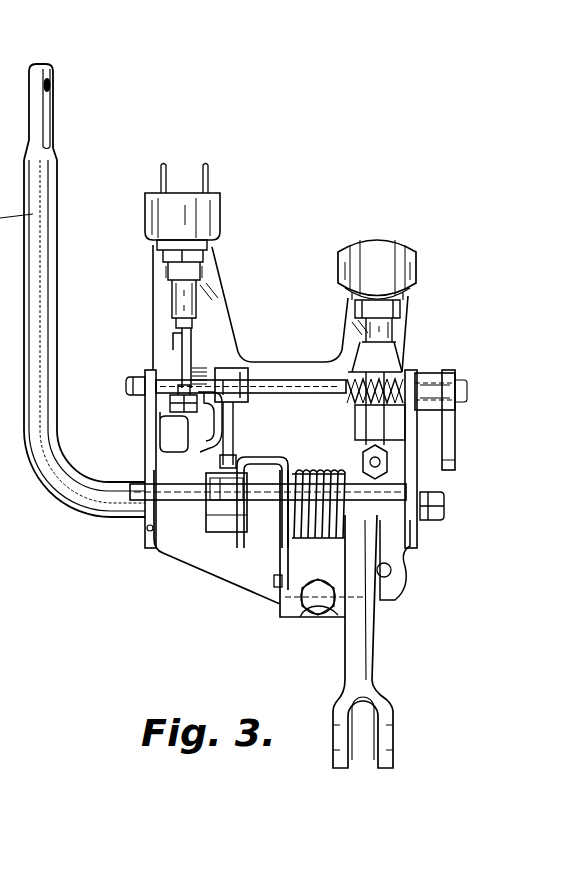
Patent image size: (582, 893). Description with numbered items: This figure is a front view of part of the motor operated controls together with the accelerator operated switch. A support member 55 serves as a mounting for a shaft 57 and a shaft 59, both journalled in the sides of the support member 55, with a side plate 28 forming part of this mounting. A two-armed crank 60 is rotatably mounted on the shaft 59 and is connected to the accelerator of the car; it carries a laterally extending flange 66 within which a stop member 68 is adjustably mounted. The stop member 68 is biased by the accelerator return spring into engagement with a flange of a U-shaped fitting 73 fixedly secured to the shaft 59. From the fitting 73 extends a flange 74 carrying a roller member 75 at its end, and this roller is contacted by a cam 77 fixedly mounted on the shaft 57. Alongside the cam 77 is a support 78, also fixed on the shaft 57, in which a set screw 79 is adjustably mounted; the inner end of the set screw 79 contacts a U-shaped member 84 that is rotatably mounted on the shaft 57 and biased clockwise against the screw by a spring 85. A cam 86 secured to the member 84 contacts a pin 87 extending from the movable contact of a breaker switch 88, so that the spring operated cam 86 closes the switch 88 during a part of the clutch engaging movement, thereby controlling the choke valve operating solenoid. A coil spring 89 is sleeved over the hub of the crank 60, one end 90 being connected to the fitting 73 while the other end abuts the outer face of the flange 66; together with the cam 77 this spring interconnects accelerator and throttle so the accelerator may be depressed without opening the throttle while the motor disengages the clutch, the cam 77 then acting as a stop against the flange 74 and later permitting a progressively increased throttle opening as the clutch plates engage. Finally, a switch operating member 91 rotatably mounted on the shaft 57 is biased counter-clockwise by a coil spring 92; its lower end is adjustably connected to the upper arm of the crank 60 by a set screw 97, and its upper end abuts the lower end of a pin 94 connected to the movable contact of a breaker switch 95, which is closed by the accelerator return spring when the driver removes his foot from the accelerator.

The side bracket 28 is at (455, 432).
The support member 55 is at (165, 555).
The shaft 57 is at (275, 380).
The shaft 59 is at (440, 506).
The two-armed crank 60 is at (372, 645).
The laterally extending flange 66 is at (333, 608).
The stop member 68 is at (305, 612).
The U-shaped fitting 73 is at (268, 457).
The flange 74 is at (248, 520).
The roller member 75 is at (185, 498).
The cam 77 is at (235, 448).
The support 78 is at (215, 445).
The set screw 79 is at (170, 402).
The U-shaped member 84 is at (168, 440).
The spring 85 is at (205, 365).
The cam 86 is at (182, 362).
The pin 87 is at (208, 318).
The breaker switch 88 is at (222, 212).
The coil spring 89 is at (310, 472).
The end of coil spring 90 is at (275, 585).
The switch operating member 91 is at (382, 372).
The coil spring 92 is at (395, 368).
The pin 94 is at (390, 333).
The breaker switch 95 is at (400, 258).
The set screw 97 is at (388, 462).